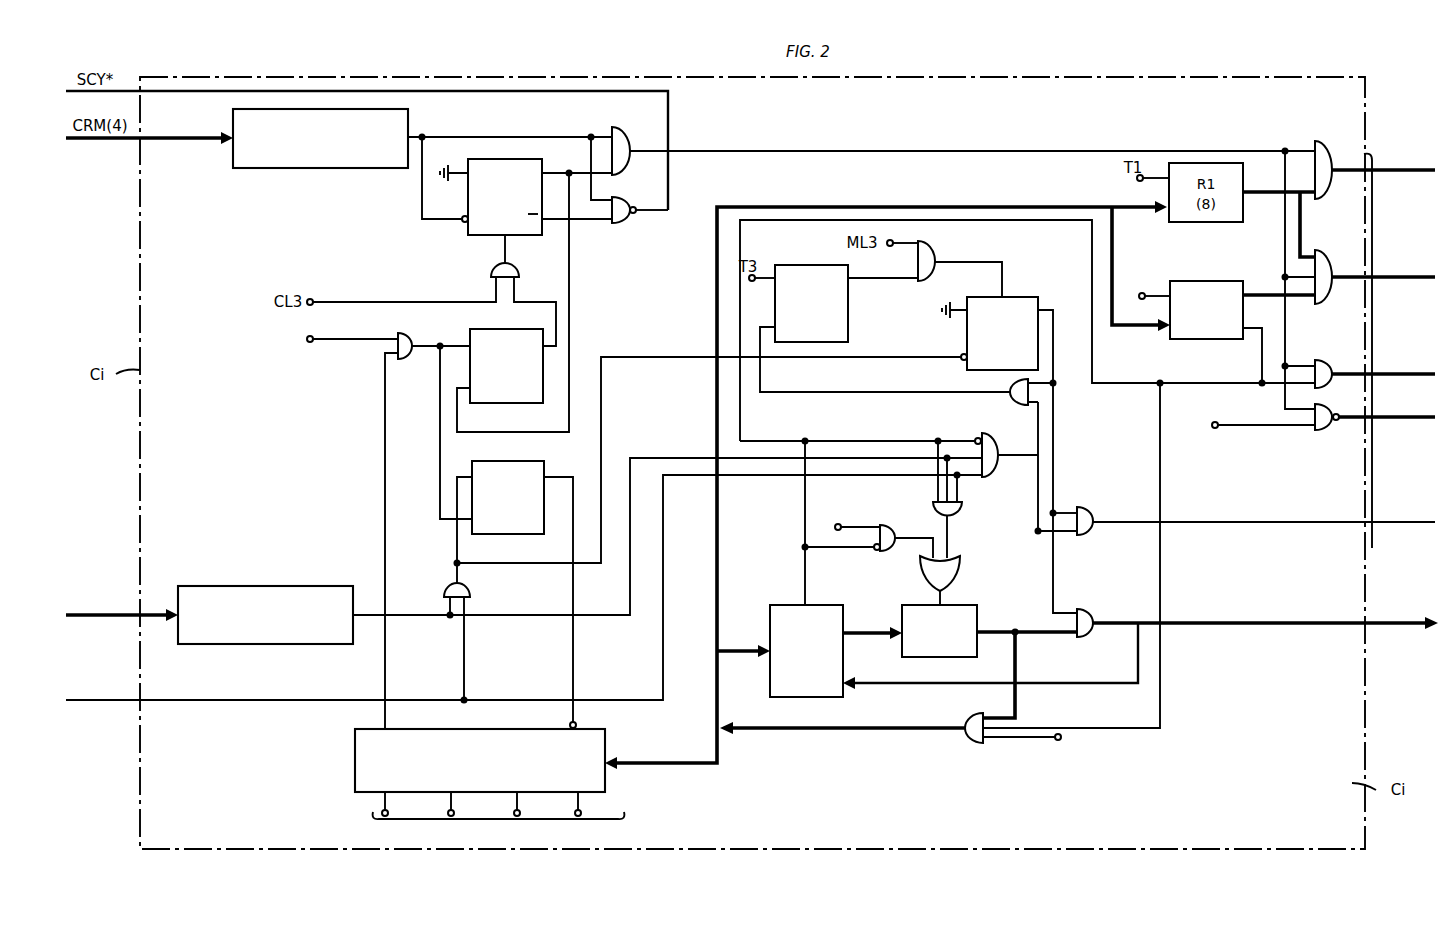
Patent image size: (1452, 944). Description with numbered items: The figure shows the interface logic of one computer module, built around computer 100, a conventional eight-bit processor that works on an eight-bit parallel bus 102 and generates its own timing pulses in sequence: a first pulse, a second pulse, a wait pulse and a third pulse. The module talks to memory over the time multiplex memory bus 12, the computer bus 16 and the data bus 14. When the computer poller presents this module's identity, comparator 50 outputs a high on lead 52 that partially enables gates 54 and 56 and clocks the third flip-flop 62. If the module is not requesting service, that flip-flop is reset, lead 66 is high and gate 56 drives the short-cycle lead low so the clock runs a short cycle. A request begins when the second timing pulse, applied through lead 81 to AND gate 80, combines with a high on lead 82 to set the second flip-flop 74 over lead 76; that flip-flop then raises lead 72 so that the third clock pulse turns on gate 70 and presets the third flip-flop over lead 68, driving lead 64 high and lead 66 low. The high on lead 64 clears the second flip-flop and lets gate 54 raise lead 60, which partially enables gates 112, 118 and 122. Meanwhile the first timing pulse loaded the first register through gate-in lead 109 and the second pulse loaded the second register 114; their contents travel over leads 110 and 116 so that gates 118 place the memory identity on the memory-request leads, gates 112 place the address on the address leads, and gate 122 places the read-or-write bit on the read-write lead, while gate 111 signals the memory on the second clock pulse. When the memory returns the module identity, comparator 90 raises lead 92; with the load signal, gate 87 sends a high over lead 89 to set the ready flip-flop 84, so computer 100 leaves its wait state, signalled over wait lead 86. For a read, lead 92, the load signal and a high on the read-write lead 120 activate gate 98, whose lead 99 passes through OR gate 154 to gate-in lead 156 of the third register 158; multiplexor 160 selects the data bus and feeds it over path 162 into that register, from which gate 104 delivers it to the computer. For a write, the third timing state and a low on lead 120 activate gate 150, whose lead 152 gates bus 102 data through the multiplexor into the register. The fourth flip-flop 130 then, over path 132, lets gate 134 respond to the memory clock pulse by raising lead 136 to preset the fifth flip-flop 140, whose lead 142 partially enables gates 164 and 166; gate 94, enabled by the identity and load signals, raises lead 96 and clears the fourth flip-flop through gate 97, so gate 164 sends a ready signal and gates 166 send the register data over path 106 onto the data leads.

The memory bus 12 is at (1372, 540).
The data bus 14 is at (1283, 620).
The computer bus 16 is at (150, 620).
The comparator 50 is at (313, 160).
The comparator output lead 52 is at (522, 137).
The gate 54 is at (629, 149).
The gate 56 is at (629, 201).
The lead 60 is at (895, 149).
The flip-flop FF3 62 is at (462, 234).
The lead 64 is at (575, 338).
The output lead 66 is at (600, 224).
The lead 68 is at (488, 260).
The gate 70 is at (516, 271).
The lead 72 is at (560, 312).
The flip-flop FF2 74 is at (508, 395).
The lead 76 is at (453, 340).
The AND gate 80 is at (409, 336).
The T2 input line 81 is at (340, 346).
The lead 82 is at (384, 477).
The flip-flop RFF 84 is at (530, 460).
The wait line 86 is at (571, 660).
The gate 87 is at (469, 641).
The lead 89 is at (454, 553).
The comparator 90 is at (269, 590).
The lead 92 is at (392, 612).
The gate 94 is at (1000, 455).
The lead 96 is at (1036, 487).
The gate 97 is at (906, 372).
The gate 98 is at (959, 512).
The lead 99 is at (950, 540).
The computer 100 is at (355, 775).
The bus 102 is at (908, 206).
The gate 104 is at (940, 573).
The path 106 is at (1030, 640).
The gate-in lead 109 is at (1134, 186).
The lead 110 is at (1262, 195).
The gate 111 is at (1308, 425).
The gate 112 is at (1376, 275).
The register R2 114 is at (1182, 282).
The lead 116 is at (1251, 290).
The gate 118 is at (1375, 169).
The READ/WRITE lead 120 is at (826, 436).
The gate 122 is at (1375, 363).
The flip-flop FF4 130 is at (806, 265).
The path 132 is at (883, 284).
The gate 134 is at (937, 257).
The lead 136 is at (1004, 262).
The flip-flop FF5 140 is at (1020, 297).
The lead 142 is at (1056, 450).
The gate 150 is at (882, 524).
The lead 152 is at (914, 532).
The OR gate 154 is at (952, 573).
The gate-in lead 156 is at (931, 592).
The register R3 158 is at (980, 622).
The multiplexor 160 is at (786, 604).
The path 162 is at (873, 636).
The gate 164 is at (1256, 526).
The gate 166 is at (1093, 613).